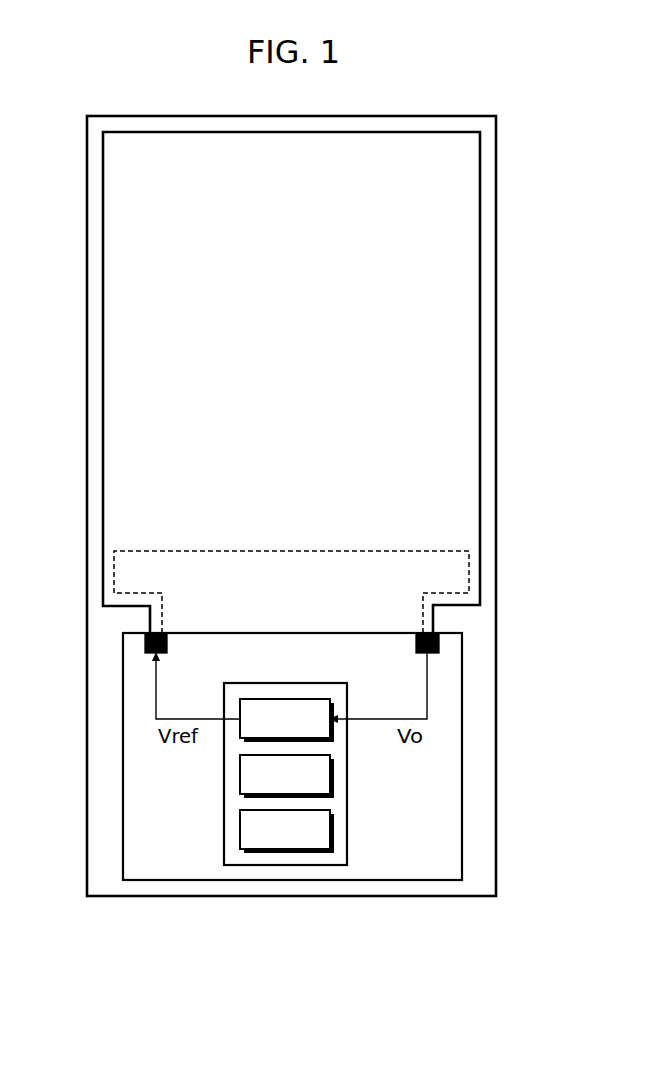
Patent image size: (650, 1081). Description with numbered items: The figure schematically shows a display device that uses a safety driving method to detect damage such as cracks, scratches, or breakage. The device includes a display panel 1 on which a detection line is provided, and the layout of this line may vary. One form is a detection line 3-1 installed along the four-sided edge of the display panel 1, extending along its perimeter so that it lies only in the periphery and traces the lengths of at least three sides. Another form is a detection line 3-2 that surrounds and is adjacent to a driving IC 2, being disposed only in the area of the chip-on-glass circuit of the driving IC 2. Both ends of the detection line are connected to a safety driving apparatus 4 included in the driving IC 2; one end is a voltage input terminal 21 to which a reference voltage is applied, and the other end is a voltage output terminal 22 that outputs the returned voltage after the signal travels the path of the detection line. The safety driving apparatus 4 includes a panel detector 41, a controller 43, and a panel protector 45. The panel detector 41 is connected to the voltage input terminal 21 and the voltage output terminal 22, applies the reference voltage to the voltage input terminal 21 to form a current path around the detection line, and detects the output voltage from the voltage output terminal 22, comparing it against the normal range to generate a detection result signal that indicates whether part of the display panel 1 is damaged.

The display panel 1 is at (497, 193).
The driving IC 2 is at (319, 880).
The detection line 3-1 is at (480, 342).
The detection line 3-2 is at (469, 573).
The safety driving apparatus 4 is at (256, 865).
The voltage input terminal 21 is at (145, 647).
The voltage output terminal 22 is at (439, 640).
The panel detector 41 is at (287, 720).
The controller 43 is at (287, 776).
The panel protector 45 is at (287, 831).